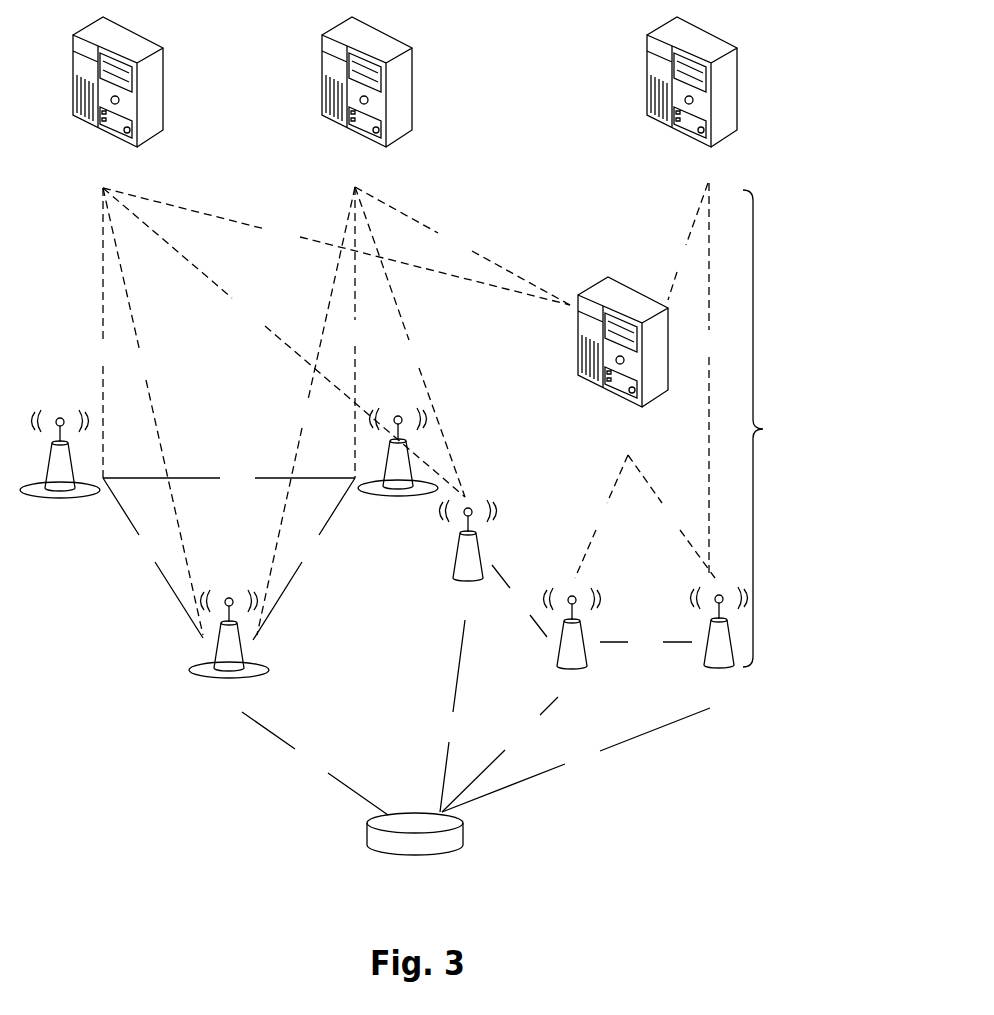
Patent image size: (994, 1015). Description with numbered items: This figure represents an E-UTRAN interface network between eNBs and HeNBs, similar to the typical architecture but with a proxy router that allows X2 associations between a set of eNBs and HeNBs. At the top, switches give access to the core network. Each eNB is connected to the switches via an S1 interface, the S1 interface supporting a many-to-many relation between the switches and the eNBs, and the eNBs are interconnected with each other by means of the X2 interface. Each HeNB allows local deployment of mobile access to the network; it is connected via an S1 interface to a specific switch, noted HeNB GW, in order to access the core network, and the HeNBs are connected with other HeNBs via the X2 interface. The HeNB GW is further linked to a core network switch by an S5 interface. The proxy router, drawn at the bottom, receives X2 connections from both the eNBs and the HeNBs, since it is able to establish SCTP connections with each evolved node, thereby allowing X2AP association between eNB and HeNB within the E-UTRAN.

The HeNB gateway switch HeNB GW is at (627, 358).
The element eNB is at (229, 553).
The element HeNB is at (591, 598).
The S1 interface S1 is at (403, 409).
The S5 interface S5 is at (710, 380).
The X2 interface X2 is at (406, 641).
The E-UTRAN architecture E-UTRAN is at (808, 428).